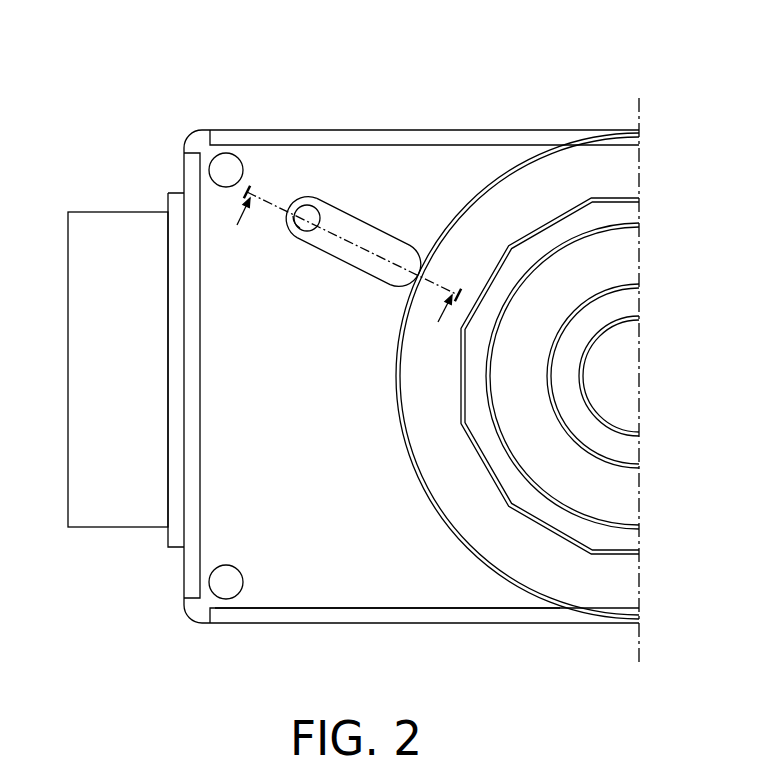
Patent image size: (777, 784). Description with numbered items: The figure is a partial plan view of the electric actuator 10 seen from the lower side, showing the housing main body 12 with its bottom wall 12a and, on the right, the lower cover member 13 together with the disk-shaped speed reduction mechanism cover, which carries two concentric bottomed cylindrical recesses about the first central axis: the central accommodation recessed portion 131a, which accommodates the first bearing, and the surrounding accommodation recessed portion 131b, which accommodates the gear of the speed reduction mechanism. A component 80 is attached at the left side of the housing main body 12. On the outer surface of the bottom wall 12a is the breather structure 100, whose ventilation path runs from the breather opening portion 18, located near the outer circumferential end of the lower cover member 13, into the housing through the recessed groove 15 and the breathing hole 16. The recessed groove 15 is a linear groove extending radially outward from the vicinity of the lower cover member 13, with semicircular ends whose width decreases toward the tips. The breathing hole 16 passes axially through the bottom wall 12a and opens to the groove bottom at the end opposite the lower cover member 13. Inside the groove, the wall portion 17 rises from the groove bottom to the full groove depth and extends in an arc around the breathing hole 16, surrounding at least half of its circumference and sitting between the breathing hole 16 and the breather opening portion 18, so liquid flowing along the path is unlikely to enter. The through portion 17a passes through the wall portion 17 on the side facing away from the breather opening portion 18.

The motor device 10 is at (598, 110).
The housing main body 12 is at (525, 130).
The bottom wall 12a is at (333, 588).
The lower cover member 13 is at (598, 598).
The accommodation recessed portion 131a is at (605, 415).
The accommodation recessed portion 131b is at (497, 483).
The recessed groove 15 is at (360, 235).
The breathing hole 16 is at (337, 212).
The wall portion 17 is at (315, 203).
The through portion 17a is at (292, 208).
The breather opening portion 18 is at (420, 270).
The connector 80 is at (108, 218).
The breather structure 100 is at (398, 230).